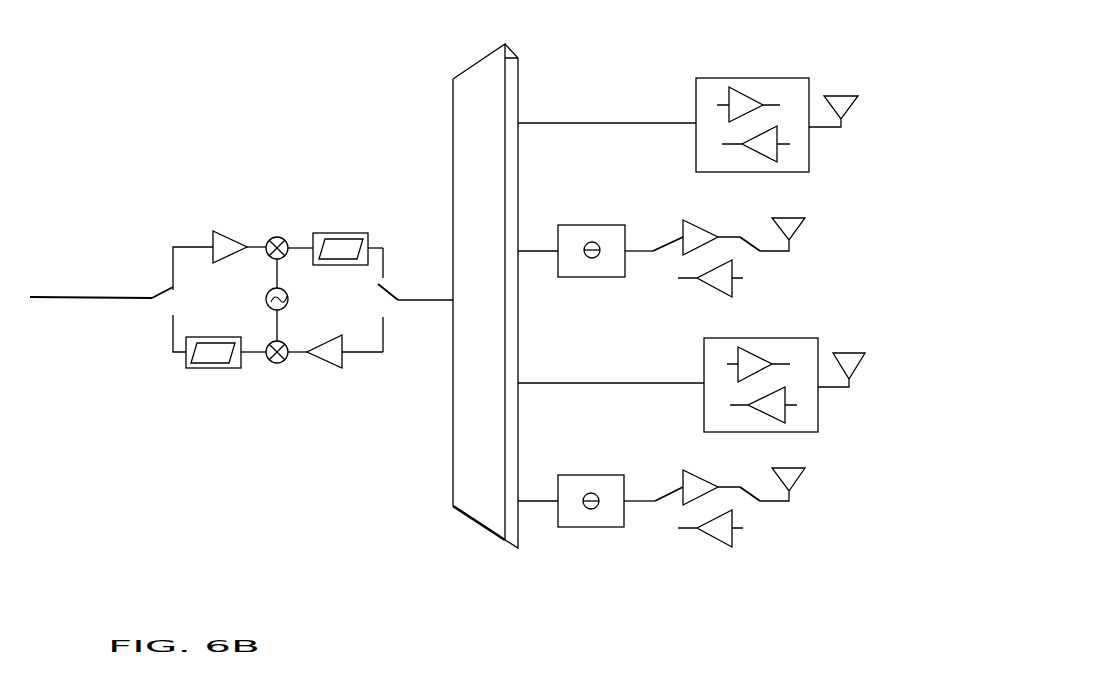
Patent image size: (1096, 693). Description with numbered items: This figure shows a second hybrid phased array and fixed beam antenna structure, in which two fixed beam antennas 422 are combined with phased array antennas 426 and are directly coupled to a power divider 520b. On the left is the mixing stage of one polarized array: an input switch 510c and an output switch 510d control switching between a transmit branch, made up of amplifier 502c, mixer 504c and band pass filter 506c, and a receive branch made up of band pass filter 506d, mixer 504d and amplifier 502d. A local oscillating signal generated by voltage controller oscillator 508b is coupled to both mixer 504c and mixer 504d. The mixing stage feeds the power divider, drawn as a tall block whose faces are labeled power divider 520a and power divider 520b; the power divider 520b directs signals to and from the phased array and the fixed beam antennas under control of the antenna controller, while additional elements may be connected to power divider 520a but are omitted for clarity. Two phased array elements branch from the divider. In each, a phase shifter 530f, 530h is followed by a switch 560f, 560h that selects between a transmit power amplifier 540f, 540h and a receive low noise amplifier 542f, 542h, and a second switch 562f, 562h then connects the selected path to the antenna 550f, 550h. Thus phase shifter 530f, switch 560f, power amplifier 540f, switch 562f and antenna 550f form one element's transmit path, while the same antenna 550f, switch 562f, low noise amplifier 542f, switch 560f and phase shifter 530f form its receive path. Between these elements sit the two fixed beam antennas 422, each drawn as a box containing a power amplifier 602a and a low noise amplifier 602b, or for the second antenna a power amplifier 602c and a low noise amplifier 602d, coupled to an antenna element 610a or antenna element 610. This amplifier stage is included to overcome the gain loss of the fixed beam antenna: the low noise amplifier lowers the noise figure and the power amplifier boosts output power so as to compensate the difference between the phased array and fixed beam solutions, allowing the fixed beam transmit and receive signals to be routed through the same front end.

The fixed beam antenna 422 is at (880, 41).
The steering beam phased array 426 is at (882, 215).
The amplifier 502c is at (206, 224).
The amplifier 502d is at (338, 368).
The mixer 504c is at (271, 236).
The mixer 504d is at (278, 364).
The band pass filter 506c is at (350, 230).
The band pass filter 506d is at (200, 369).
The voltage controller oscillator 508b is at (263, 297).
The switch 510c is at (152, 291).
The switch 510d is at (384, 282).
The power divider 520a is at (478, 66).
The power divider 520b is at (506, 45).
The phase shifter 530f is at (600, 225).
The phase shifter 530h is at (600, 475).
The transmit power amplifier 540f is at (698, 225).
The transmit power amplifier 540h is at (697, 475).
The receive low noise amplifier 542f is at (732, 290).
The receive low noise amplifier 542h is at (732, 540).
The antenna 550f is at (805, 218).
The antenna 550h is at (805, 468).
The switch 560f is at (652, 254).
The switch 560h is at (653, 504).
The switch 562f is at (763, 255).
The switch 562h is at (763, 505).
The power amplifier 602a is at (740, 88).
The low noise amplifier 602b is at (778, 158).
The power amplifier 602c is at (760, 350).
The low noise amplifier 602d is at (786, 420).
The antenna element 610 is at (855, 355).
The antenna element 610a is at (845, 97).